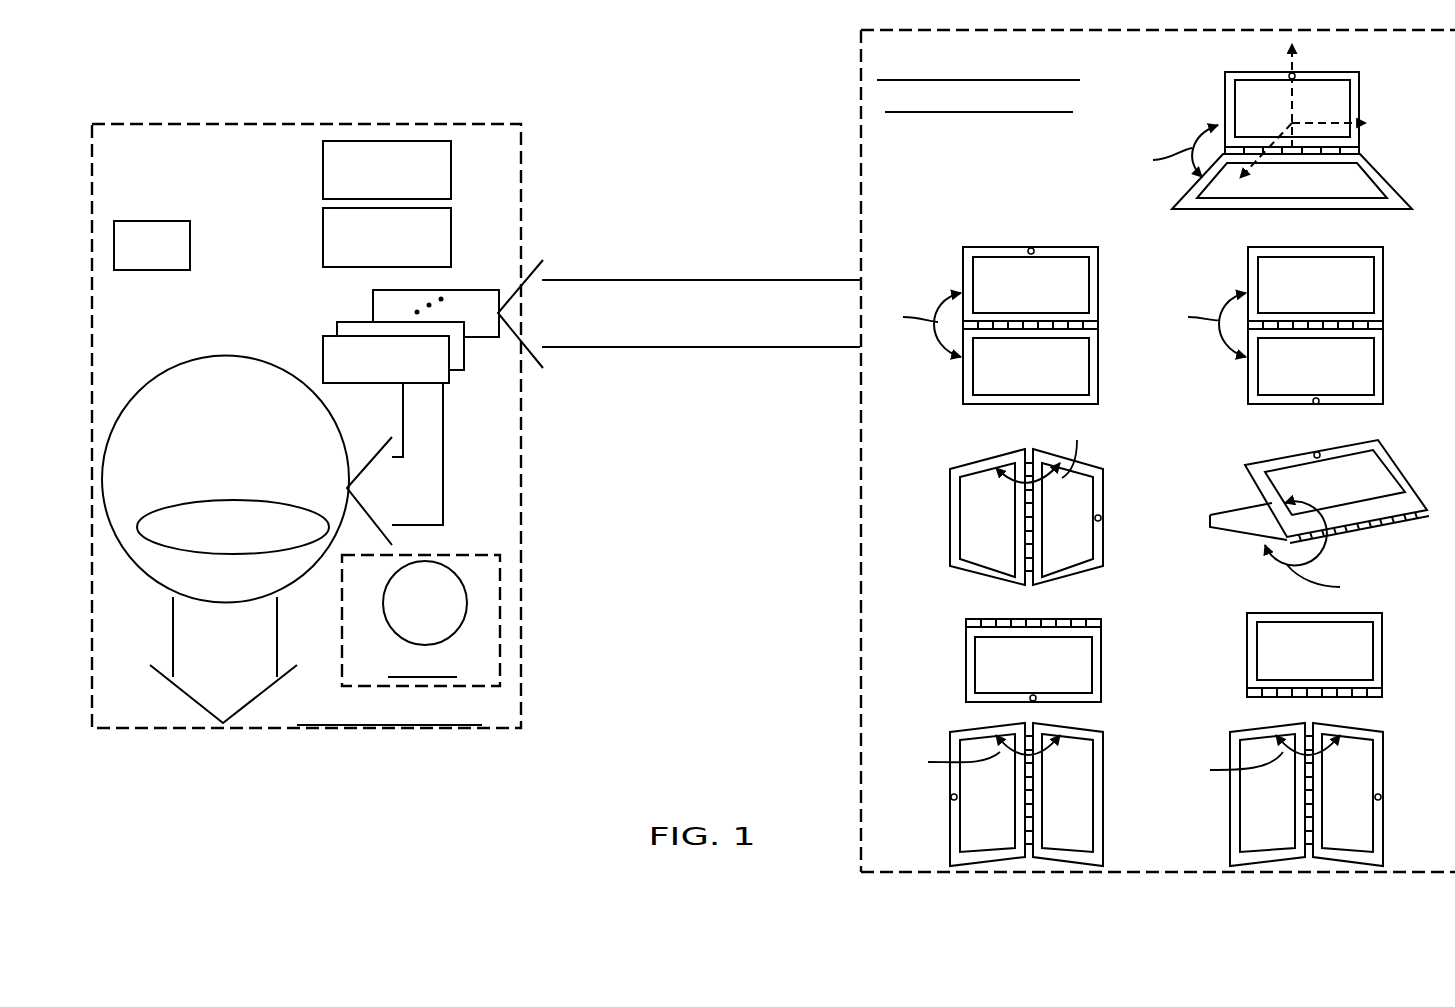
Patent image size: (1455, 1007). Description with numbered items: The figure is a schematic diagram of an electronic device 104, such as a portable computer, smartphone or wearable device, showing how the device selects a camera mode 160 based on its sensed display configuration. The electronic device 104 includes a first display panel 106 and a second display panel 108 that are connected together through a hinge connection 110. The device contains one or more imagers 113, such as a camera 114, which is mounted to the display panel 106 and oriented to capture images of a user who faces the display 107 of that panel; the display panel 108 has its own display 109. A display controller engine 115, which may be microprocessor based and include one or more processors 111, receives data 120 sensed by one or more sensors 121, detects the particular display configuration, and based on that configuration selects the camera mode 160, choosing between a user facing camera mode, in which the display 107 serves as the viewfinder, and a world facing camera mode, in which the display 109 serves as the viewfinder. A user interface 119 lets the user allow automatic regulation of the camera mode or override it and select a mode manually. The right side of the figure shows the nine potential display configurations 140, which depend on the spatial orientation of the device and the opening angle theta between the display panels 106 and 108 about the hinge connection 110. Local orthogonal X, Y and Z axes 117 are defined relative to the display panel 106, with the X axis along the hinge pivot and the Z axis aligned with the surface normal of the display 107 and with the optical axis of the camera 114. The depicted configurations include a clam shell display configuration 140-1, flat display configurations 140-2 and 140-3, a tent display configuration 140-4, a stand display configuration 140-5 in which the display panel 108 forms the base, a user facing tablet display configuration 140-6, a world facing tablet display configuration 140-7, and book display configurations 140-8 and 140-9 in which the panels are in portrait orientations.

The electronic device 104 is at (307, 123).
The display panel 106 is at (323, 232).
The display 107 is at (1247, 121).
The display panel 108 is at (323, 165).
The display 109 is at (1293, 193).
The hinge connection 110 is at (1360, 148).
The processor 111 is at (190, 551).
The imager 113 is at (500, 643).
The camera 114 is at (467, 602).
The display controller engine 115 is at (227, 355).
The local orthogonal X, Y and Z axes 117 is at (1297, 102).
The user interface 119 is at (152, 221).
The data 120 is at (443, 420).
The sensor 121 is at (367, 281).
The potential display configurations 140 is at (861, 137).
The clam shell display configuration 140-1 is at (1225, 103).
The flat display configuration 140-2 is at (963, 262).
The flat display configuration 140-3 is at (1248, 270).
The tent display configuration 140-4 is at (950, 517).
The stand display configuration 140-5 is at (1245, 535).
The user facing tablet display configuration 140-6 is at (966, 672).
The world facing tablet display configuration 140-7 is at (1247, 638).
The book display configuration 140-8 is at (1087, 728).
The book display configuration 140-9 is at (1365, 728).
The camera mode 160 is at (173, 637).